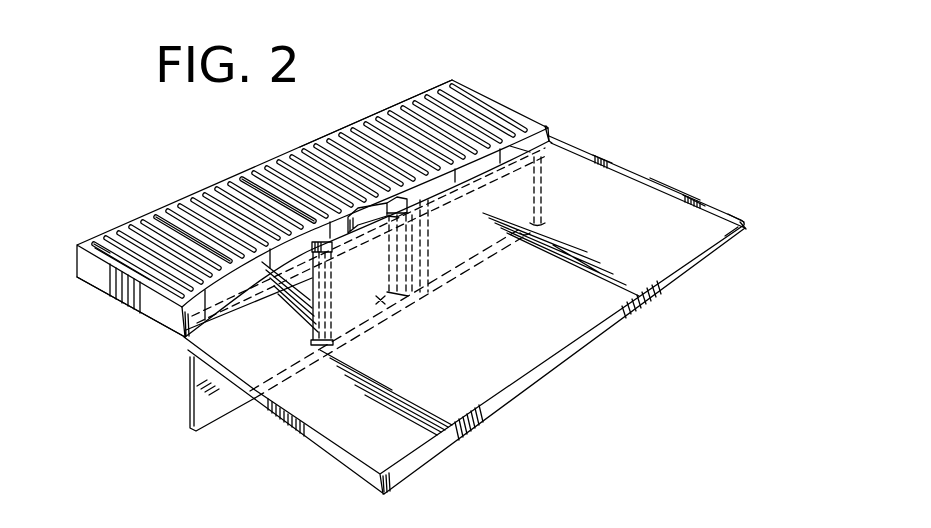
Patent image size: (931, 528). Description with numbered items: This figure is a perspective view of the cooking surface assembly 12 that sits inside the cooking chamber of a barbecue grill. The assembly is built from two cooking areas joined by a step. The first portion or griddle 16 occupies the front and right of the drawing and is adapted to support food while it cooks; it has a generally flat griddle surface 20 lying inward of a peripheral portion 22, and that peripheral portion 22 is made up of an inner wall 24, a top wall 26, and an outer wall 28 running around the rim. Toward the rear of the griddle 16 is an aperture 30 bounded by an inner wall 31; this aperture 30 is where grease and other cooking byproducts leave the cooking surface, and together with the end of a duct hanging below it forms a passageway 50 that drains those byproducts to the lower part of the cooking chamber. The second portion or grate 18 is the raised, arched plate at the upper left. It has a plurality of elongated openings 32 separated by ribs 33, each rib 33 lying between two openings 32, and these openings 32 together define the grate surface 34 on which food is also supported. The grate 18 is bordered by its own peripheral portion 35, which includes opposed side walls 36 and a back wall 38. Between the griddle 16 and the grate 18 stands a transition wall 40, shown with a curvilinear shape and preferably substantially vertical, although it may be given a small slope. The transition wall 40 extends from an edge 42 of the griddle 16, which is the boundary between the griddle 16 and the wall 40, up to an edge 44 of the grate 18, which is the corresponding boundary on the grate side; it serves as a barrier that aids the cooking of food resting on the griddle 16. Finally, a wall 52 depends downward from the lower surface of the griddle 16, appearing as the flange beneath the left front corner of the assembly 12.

The cooking surface assembly 12 is at (665, 145).
The first portion or griddle 16 is at (640, 212).
The second portion or grate 18 is at (473, 121).
The griddle surface 20 is at (470, 393).
The peripheral portion 22 is at (730, 213).
The inner wall 24 is at (705, 206).
The top wall 26 is at (745, 222).
The outer wall 28 is at (732, 242).
The aperture 30 is at (363, 222).
The inner wall of aperture 31 is at (337, 232).
The openings 32 is at (178, 220).
The ribs 33 is at (252, 185).
The grate surface 34 is at (120, 232).
The peripheral portion of grate 35 is at (96, 255).
The side walls 36 is at (150, 320).
The back wall 38 is at (370, 115).
The transition wall 40 is at (607, 162).
The edge of first portion 42 is at (513, 150).
The edge of second portion 44 is at (549, 128).
The passageway or channel 50 is at (363, 277).
The wall 52 is at (229, 398).